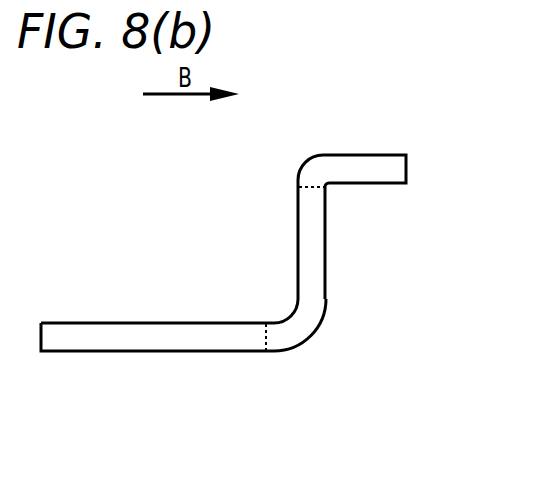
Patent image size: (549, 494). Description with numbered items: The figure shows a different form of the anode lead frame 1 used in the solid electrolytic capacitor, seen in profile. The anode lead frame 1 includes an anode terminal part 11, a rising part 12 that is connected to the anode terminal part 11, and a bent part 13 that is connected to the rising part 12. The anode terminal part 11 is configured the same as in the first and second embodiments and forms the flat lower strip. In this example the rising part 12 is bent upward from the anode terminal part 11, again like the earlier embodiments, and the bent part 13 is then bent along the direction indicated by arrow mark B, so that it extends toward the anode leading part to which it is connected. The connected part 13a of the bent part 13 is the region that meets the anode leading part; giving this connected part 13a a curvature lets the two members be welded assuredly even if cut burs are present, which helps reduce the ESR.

The anode lead frame 1 is at (153, 182).
The anode terminal part 11 is at (217, 335).
The rising part 12 is at (310, 238).
The bent part 13 is at (313, 176).
The connected part 13a is at (286, 126).